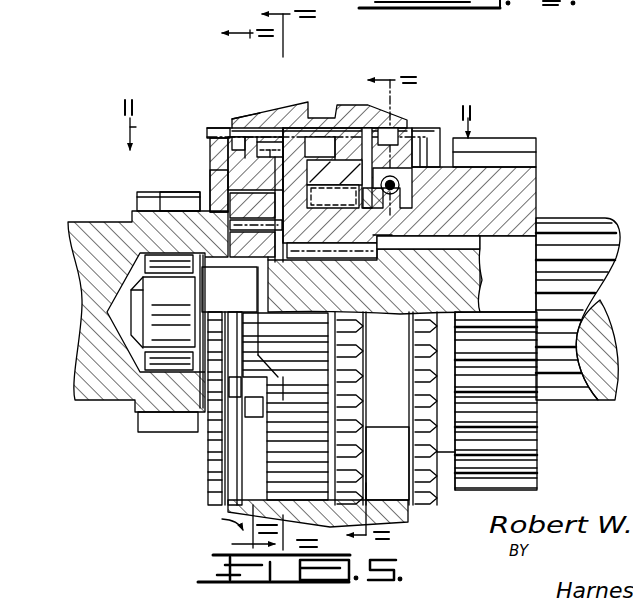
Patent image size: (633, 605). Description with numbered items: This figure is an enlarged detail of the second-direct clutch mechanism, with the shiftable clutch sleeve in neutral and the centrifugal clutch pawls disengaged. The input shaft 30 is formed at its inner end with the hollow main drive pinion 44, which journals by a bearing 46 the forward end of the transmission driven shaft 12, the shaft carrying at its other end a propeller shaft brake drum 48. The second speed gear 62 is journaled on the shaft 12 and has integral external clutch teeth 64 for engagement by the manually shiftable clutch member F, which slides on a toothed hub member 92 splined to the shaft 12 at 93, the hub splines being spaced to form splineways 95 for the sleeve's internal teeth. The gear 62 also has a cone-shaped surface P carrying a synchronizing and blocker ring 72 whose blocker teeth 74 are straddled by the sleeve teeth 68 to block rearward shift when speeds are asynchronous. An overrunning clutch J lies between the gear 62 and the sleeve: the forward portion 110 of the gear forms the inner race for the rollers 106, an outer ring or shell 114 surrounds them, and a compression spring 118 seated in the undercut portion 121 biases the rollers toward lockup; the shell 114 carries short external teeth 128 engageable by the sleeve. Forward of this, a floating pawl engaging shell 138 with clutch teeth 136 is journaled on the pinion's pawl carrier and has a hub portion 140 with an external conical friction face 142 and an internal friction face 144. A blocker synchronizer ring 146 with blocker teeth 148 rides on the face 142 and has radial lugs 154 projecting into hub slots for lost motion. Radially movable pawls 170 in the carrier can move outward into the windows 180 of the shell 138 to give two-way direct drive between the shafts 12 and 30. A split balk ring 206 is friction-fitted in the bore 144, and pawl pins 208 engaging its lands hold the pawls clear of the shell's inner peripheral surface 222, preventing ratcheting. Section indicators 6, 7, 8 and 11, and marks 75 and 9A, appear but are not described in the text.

The section line 6- 6 is at (235, 283).
The section line 7- 7 is at (265, 277).
The section line 8- 8 is at (381, 304).
The section line 11- 11 is at (292, 126).
The transmission driven shaft 12 is at (435, 288).
The shaft 30 is at (90, 369).
The main drive pinion 44 is at (140, 192).
The bearing 46 is at (160, 372).
The propeller shaft brake drum 48 is at (200, 193).
The second speed gear 62 is at (513, 137).
The external clutch teeth 64 is at (433, 133).
The clutch sleeve teeth 68 is at (393, 128).
The synchronizing and blocker ring 72 is at (413, 147).
The clutch blocker synchronizing teeth 74 is at (409, 133).
The gear 75 is at (402, 450).
The toothed hub member 92 is at (287, 182).
The spline connection 93 is at (450, 243).
The splineways 95 is at (250, 450).
The member 9A is at (270, 150).
The rollers 106 is at (350, 137).
The forward portion of the gear 110 is at (338, 218).
The outer ring or shell 114 is at (358, 174).
The compression spring 118 is at (428, 189).
The undercut portion 121 is at (480, 155).
The short external teeth 128 is at (348, 106).
The clutch teeth 136 is at (207, 128).
The floating pawl engaging shell 138 is at (207, 162).
The hub portion 140 is at (300, 137).
The external conical friction face 142 is at (255, 163).
The internal friction face 144 is at (320, 137).
The blocker synchronizer ring 146 is at (262, 140).
The blocker teeth 148 is at (240, 143).
The external radially directed lug 154 is at (273, 150).
The pawls 170 is at (275, 172).
The slots or windows 180 is at (270, 190).
The split blocker or balk ring 206 is at (230, 226).
The pin 208 is at (228, 243).
The inner peripheral surface 222 is at (207, 131).
The manually shiftable clutch member F is at (232, 119).
The overrunning clutch J is at (345, 208).
The cone-shaped surface P is at (410, 172).